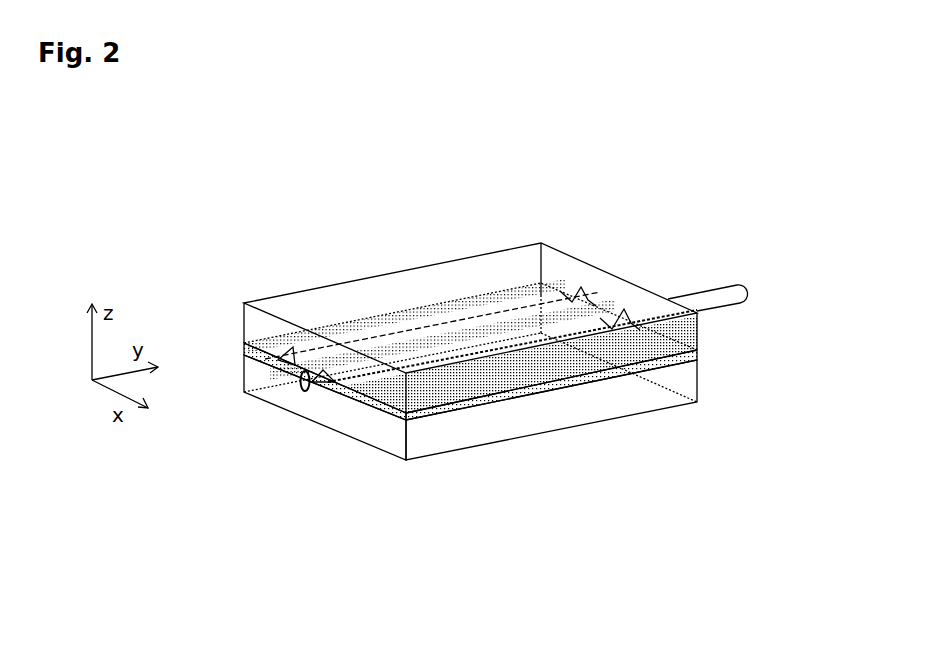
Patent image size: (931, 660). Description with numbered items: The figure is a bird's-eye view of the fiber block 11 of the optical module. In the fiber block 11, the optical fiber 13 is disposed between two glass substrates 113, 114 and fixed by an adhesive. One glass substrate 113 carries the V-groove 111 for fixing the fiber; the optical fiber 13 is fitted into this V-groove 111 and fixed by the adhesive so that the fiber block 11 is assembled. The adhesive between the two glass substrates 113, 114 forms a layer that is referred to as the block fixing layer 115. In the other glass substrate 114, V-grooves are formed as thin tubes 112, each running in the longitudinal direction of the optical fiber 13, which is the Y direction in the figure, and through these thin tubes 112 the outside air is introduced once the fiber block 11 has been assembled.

The fiber block 11 is at (477, 312).
The optical fiber 13 is at (708, 264).
The V-groove 111 is at (262, 426).
The thin tube 112 is at (472, 321).
The glass substrate 113 is at (435, 377).
The glass substrate 114 is at (435, 328).
The block fixing layer 115 is at (512, 381).